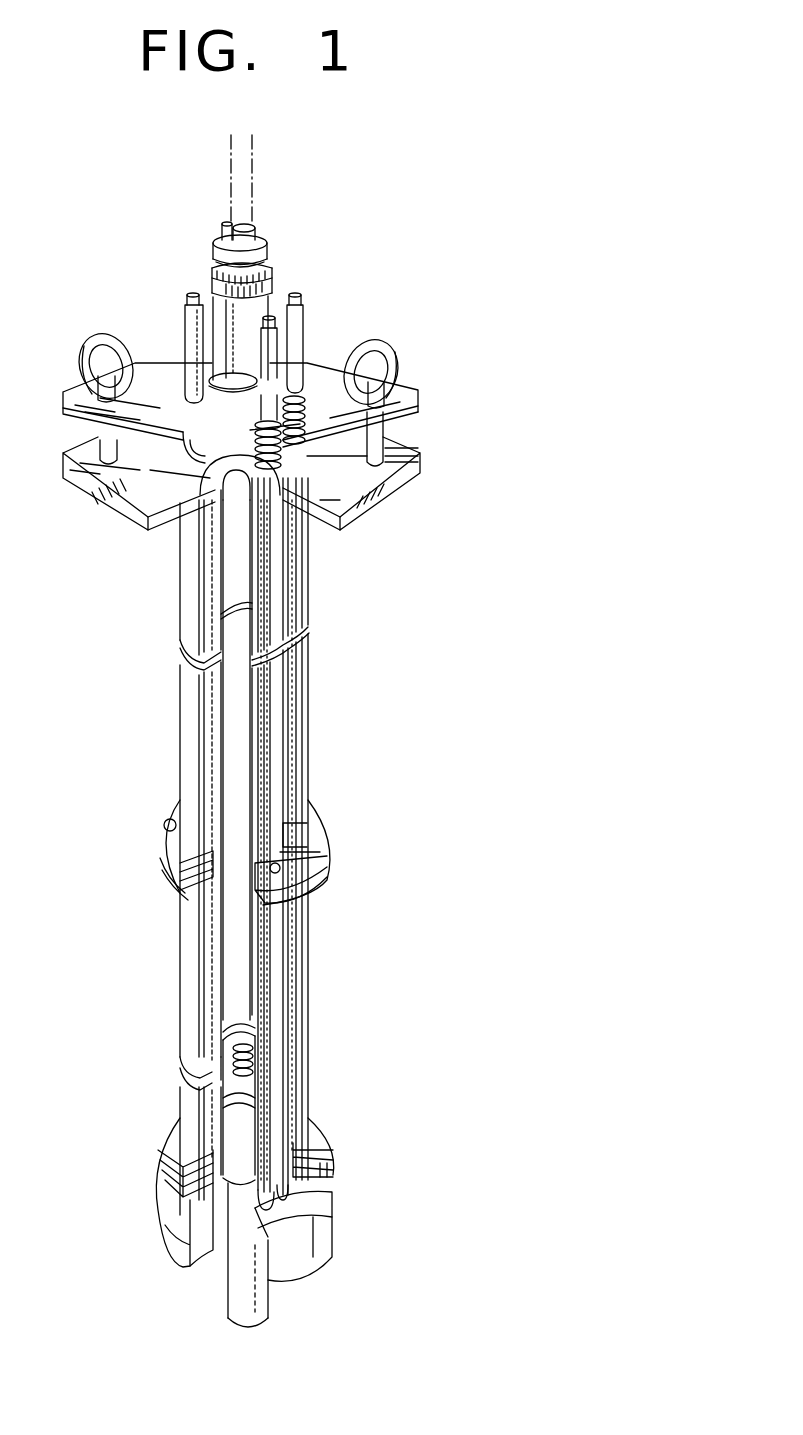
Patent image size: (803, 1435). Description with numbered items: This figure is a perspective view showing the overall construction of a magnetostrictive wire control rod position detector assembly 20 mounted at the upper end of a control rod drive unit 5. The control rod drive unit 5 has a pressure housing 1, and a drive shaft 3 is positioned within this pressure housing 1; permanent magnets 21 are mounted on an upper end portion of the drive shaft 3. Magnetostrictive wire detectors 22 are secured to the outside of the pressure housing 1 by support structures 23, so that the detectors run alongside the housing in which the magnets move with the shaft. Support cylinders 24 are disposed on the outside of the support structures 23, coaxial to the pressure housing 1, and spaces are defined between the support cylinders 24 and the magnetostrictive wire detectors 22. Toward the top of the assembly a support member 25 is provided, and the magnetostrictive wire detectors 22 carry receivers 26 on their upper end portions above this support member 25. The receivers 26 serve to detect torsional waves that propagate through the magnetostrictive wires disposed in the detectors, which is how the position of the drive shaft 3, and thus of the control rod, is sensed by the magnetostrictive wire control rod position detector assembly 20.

The pressure housing 1 is at (212, 992).
The drive shaft 3 is at (242, 1275).
The control rod drive unit 5 is at (330, 1238).
The magnetostrictive wire control rod position detector assembly 20 is at (292, 267).
The permanent magnets 21 is at (237, 1123).
The magnetostrictive wire detectors 22 is at (258, 752).
The support structures 23 is at (320, 856).
The support cylinders 24 is at (318, 623).
The support member 25 is at (413, 450).
The receivers 26 is at (303, 327).